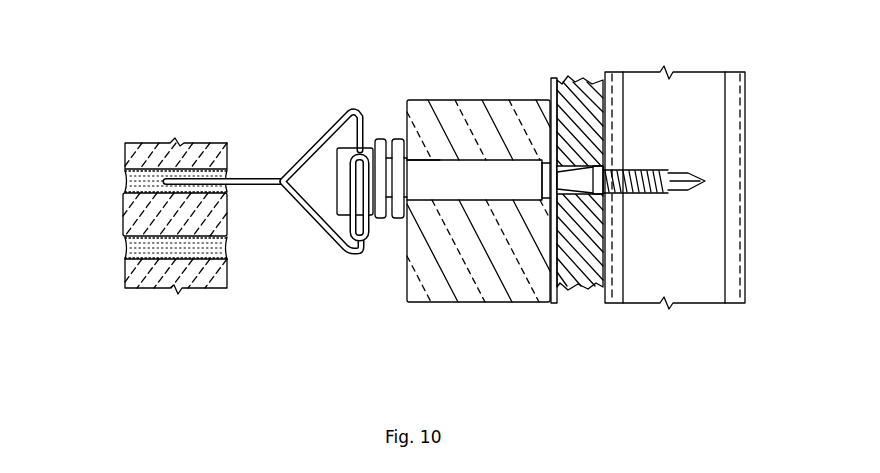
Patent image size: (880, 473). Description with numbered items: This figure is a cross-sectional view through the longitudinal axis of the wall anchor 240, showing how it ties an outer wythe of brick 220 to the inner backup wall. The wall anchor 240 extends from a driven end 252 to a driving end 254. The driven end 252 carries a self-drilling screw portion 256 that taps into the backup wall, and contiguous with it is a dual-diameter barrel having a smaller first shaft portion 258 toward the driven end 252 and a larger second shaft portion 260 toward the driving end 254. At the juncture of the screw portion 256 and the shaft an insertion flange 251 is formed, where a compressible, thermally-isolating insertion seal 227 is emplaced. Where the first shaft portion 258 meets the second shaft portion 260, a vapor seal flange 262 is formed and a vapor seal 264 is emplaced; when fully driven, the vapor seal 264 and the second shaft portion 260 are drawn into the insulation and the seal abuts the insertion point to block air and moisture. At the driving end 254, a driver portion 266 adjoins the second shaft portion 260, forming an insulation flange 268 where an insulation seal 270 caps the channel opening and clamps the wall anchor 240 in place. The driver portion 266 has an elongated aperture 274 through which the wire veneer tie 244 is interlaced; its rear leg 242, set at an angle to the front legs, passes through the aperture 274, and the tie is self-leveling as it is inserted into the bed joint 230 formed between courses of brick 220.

The brick 220 is at (125, 270).
The bed joint 230 is at (130, 178).
The veneer tie 244 is at (252, 177).
The driver portion 266 is at (327, 136).
The elongated aperture 274 is at (354, 176).
The rear leg 242 is at (372, 238).
The driving end 254 is at (383, 136).
The insulation seal 270 is at (403, 220).
The wall anchor 240 is at (478, 158).
The second shaft portion 260 is at (488, 191).
The insulation flange 268 is at (425, 158).
The vapor seal 264 is at (547, 194).
The vapor seal flange 262 is at (557, 160).
The insertion seal 227 is at (583, 194).
The first shaft portion 258 is at (607, 200).
The insertion flange 251 is at (607, 170).
The screw portion 256 is at (687, 194).
The driven end 252 is at (703, 167).